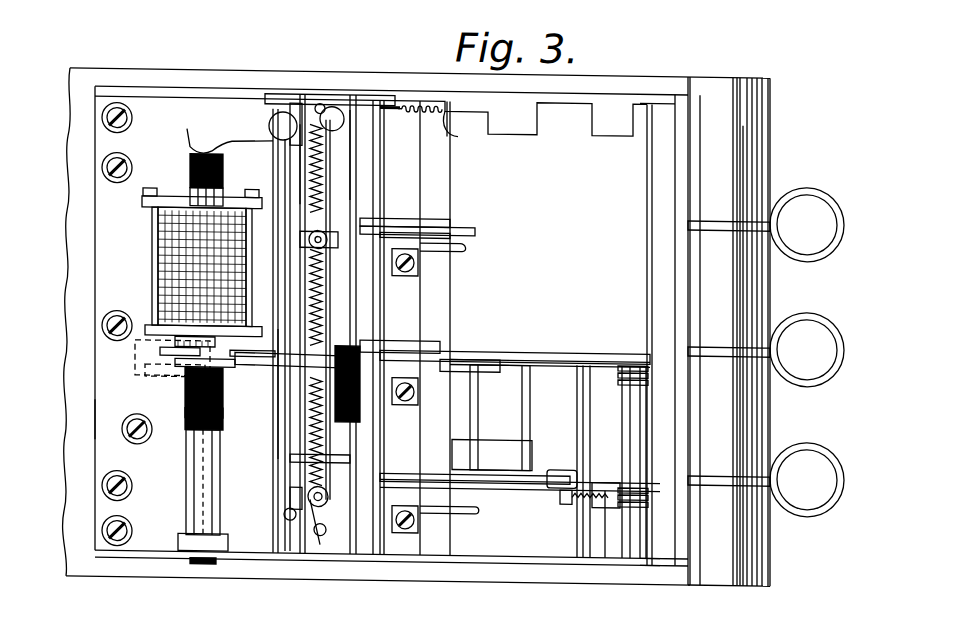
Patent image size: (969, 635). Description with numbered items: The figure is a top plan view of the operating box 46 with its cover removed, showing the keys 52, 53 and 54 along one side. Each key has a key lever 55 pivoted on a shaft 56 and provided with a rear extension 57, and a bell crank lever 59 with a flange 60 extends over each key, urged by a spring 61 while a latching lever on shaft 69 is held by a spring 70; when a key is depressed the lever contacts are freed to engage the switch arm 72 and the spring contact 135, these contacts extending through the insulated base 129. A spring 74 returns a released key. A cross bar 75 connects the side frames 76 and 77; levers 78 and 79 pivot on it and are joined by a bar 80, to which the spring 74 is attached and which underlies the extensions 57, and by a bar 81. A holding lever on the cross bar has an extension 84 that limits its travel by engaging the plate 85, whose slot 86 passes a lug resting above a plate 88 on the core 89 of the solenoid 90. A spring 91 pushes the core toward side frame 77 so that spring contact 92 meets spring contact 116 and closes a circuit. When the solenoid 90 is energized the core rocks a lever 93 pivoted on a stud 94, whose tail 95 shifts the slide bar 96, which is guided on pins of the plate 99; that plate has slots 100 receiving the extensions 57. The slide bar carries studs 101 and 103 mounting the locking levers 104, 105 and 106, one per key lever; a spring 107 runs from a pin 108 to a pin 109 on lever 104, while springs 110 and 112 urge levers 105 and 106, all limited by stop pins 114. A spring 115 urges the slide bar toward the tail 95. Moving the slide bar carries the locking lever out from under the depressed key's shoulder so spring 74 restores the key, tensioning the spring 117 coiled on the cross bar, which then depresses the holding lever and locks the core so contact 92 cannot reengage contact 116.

The operating box 46 is at (655, 580).
The key 52 is at (822, 440).
The key 53 is at (824, 311).
The key 54 is at (807, 181).
The key lever 55 is at (722, 225).
The shaft 56 is at (515, 402).
The extension 57 is at (450, 230).
The bell crank lever 59 is at (545, 489).
The flange 60 is at (560, 469).
The spring 61 is at (596, 479).
The shaft 69 is at (630, 538).
The spring 70 is at (622, 381).
The switch arm 72 is at (440, 483).
The spring 74 is at (463, 122).
The cross bar 75 is at (330, 337).
The side frame 76 is at (378, 96).
The side frame 77 is at (283, 559).
The lever 78 is at (294, 104).
The lever 79 is at (291, 560).
The bar 80 is at (375, 203).
The bar 81 is at (350, 178).
The extension 84 is at (108, 418).
The plate 85 is at (175, 365).
The slot 86 is at (190, 375).
The plate 88 is at (284, 377).
The core 89 is at (185, 343).
The solenoid 90 is at (170, 256).
The spring 91 is at (185, 338).
The spring contact 92 is at (222, 420).
The lever 93 is at (200, 138).
The stud 94 is at (276, 114).
The tail 95 is at (335, 107).
The slide bar 96 is at (352, 170).
The plate 99 is at (358, 552).
The slot 100 is at (372, 219).
The stud 101 is at (338, 480).
The stud 103 is at (319, 250).
The locking lever 104 is at (350, 485).
The locking lever 105 is at (400, 343).
The locking lever 106 is at (431, 232).
The spring 107 is at (313, 530).
The pin 108 is at (320, 538).
The pin 109 is at (308, 497).
The spring 110 is at (360, 430).
The spring 112 is at (318, 318).
The stop pin 114 is at (284, 515).
The spring 115 is at (318, 162).
The spring contact 116 is at (186, 440).
The spring 117 is at (278, 400).
The insulated base 129 is at (435, 540).
The spring contact 135 is at (463, 246).